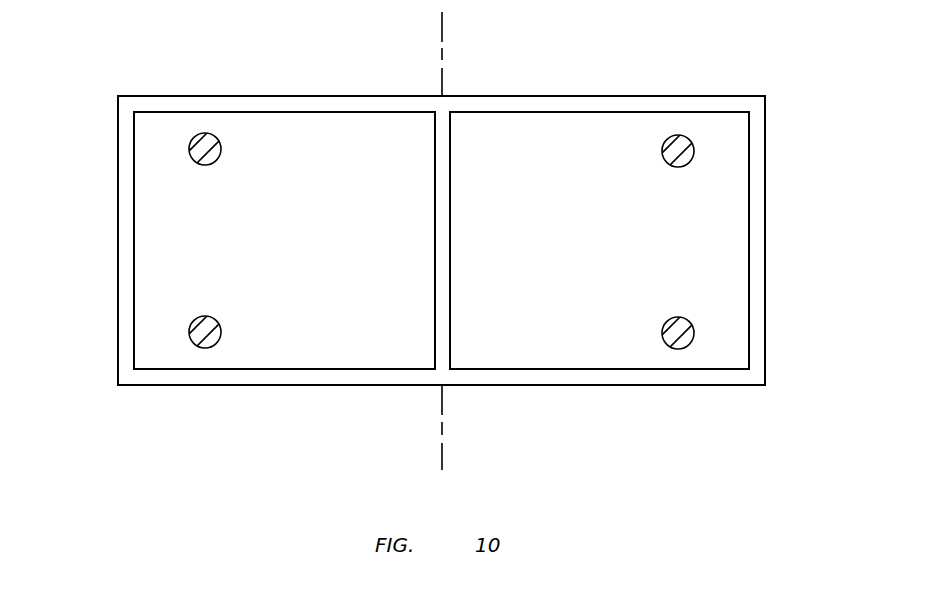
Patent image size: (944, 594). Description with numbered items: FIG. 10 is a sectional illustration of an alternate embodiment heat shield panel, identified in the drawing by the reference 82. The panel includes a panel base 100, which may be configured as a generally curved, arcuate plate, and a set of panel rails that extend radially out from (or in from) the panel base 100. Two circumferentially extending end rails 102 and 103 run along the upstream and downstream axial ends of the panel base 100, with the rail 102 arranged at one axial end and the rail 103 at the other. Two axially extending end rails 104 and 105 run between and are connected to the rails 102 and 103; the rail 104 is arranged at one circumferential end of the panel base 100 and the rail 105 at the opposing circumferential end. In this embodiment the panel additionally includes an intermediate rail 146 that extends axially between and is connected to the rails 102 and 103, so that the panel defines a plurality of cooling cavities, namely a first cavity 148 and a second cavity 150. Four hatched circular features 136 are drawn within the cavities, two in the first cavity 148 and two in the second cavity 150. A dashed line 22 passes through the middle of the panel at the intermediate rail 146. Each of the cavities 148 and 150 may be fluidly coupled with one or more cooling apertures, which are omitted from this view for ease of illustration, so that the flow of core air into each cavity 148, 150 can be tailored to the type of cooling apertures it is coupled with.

The panel base 100 is at (303, 345).
The circumferentially extending end rail 102 is at (230, 378).
The circumferentially extending end rail 103 is at (227, 106).
The axially extending end rail 104 is at (128, 207).
The axially extending end rail 105 is at (758, 207).
The mounting holes 136 is at (222, 148).
The intermediate rail 146 is at (438, 296).
The first cavity 148 is at (329, 249).
The second cavity 150 is at (600, 240).
The center line 22 is at (442, 448).
The plate assembly 82 is at (717, 80).